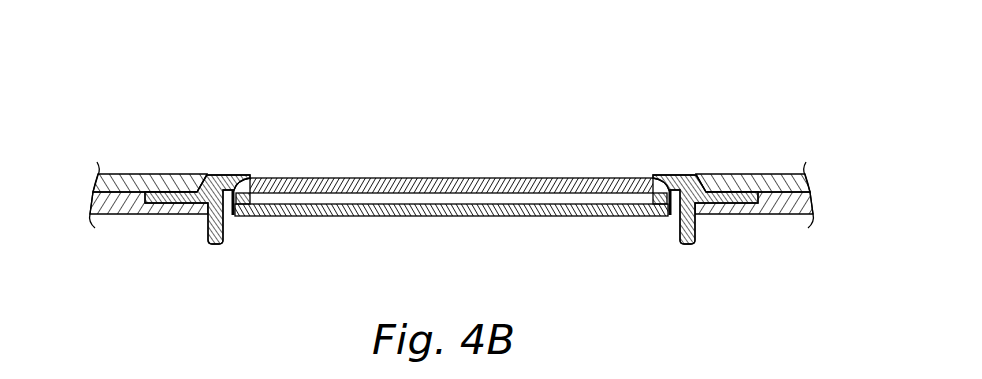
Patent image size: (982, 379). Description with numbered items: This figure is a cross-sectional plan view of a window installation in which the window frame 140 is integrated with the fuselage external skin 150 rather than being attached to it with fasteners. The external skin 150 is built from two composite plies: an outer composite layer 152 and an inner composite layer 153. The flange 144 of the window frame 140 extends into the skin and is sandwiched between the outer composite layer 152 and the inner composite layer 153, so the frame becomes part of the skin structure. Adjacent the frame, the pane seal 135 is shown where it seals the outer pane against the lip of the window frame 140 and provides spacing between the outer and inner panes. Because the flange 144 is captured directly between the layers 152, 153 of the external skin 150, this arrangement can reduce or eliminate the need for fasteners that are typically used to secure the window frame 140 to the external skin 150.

The external skin 150 is at (160, 182).
The outer composite layer 152 is at (141, 178).
The inner composite layer 153 is at (163, 216).
The flange 144 is at (451, 209).
The pane seal 135 is at (265, 217).
The window frame 140 is at (694, 235).